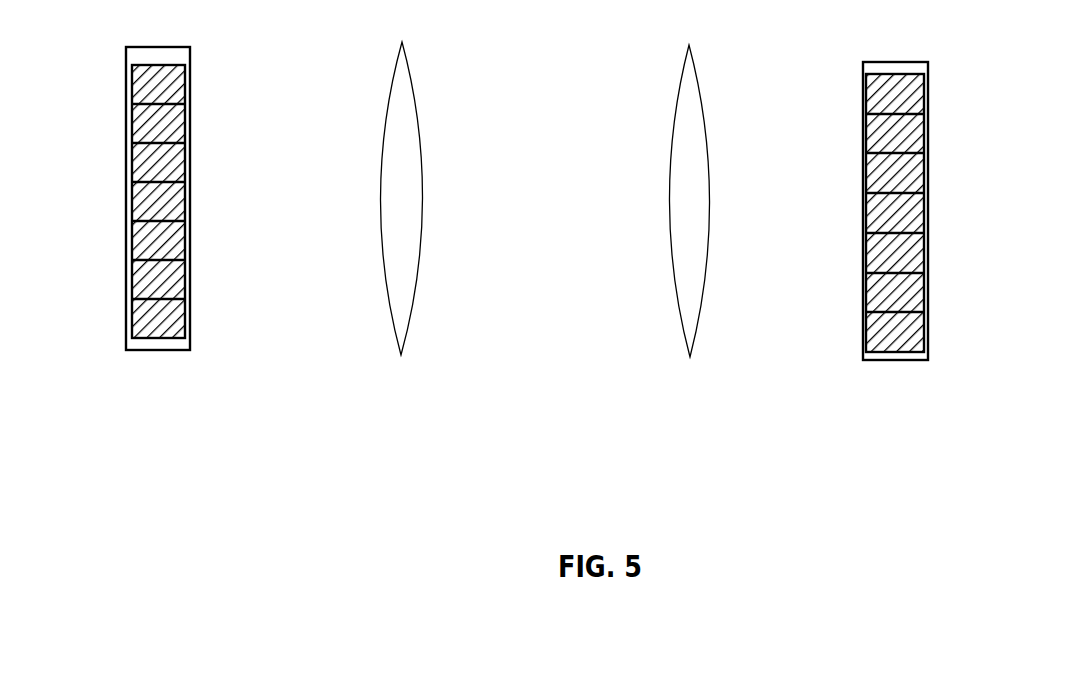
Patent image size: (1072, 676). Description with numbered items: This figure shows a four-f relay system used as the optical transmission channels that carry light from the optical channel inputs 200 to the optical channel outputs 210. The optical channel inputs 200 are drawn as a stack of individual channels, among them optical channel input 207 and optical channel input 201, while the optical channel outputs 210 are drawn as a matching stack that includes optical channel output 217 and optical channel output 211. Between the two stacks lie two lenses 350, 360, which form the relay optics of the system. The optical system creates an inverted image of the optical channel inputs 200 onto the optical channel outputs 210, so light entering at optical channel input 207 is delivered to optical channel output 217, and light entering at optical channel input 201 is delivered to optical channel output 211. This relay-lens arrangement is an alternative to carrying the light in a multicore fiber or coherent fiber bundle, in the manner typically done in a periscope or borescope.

The optical channel inputs 200 is at (203, 197).
The optical channel input 201 is at (187, 318).
The optical channel input 207 is at (186, 97).
The optical channel outputs 210 is at (940, 209).
The optical channel output 211 is at (926, 112).
The optical channel output 217 is at (927, 325).
The first lens 350 is at (398, 219).
The second lens 360 is at (692, 216).